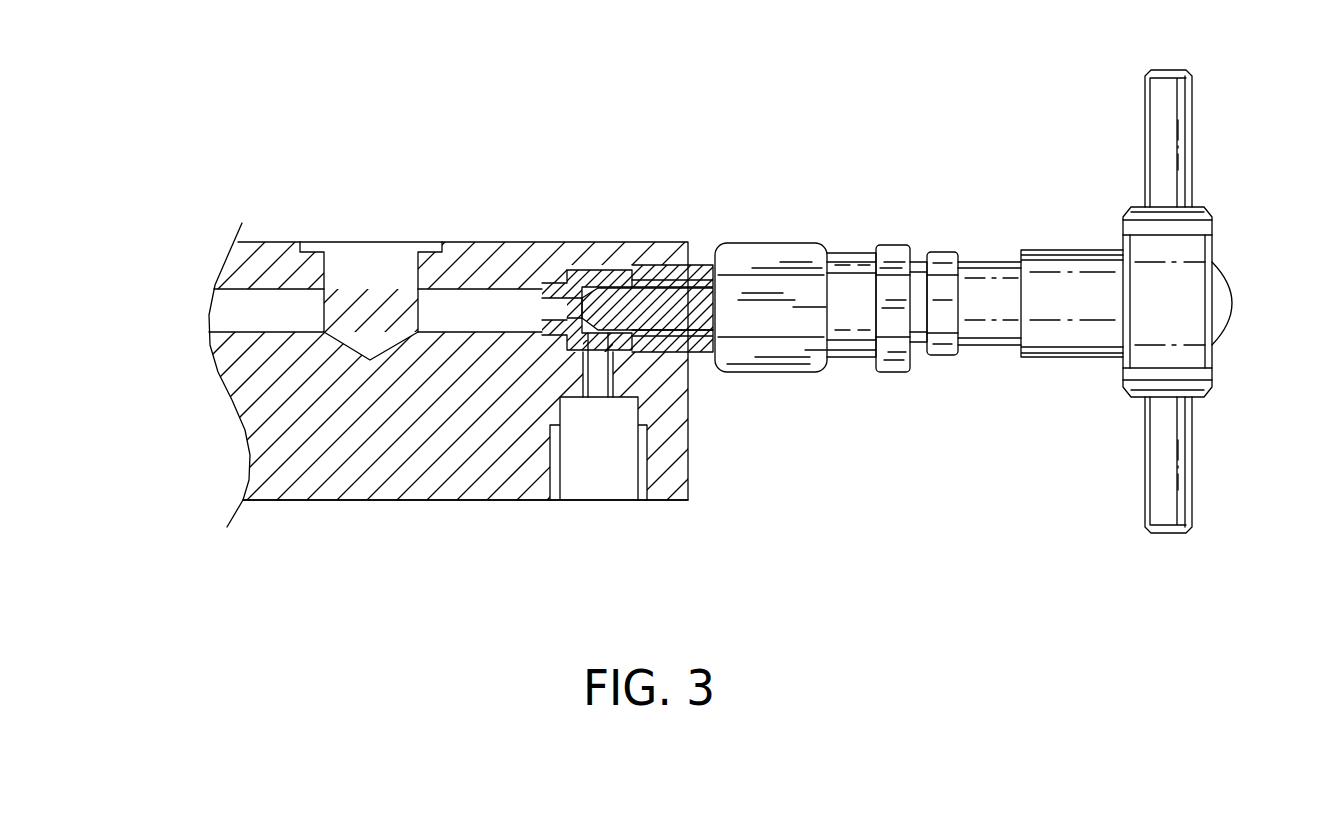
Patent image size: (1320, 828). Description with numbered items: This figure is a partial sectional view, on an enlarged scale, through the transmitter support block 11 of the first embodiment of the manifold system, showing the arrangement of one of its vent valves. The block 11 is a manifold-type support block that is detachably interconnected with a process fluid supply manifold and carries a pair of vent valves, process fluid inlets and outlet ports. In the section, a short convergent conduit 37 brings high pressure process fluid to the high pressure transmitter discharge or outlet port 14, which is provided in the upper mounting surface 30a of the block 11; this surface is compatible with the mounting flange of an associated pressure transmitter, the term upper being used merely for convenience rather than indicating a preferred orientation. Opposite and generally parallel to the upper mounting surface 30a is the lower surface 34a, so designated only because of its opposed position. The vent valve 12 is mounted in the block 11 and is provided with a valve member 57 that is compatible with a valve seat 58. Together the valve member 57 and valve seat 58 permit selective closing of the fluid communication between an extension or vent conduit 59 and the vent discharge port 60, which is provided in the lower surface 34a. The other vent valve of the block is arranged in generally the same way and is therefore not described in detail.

The transmitter support block 11 is at (330, 518).
The vent valve 12 is at (1172, 122).
The high pressure transmitter discharge or outlet port 14 is at (369, 252).
The upper mounting surface 30a is at (633, 265).
The lower surface 34a is at (425, 500).
The convergent conduit 37 is at (278, 308).
The valve member 57 is at (699, 307).
The valve seat 58 is at (596, 273).
The extension or vent conduit 59 is at (479, 310).
The vent discharge port 60 is at (560, 463).